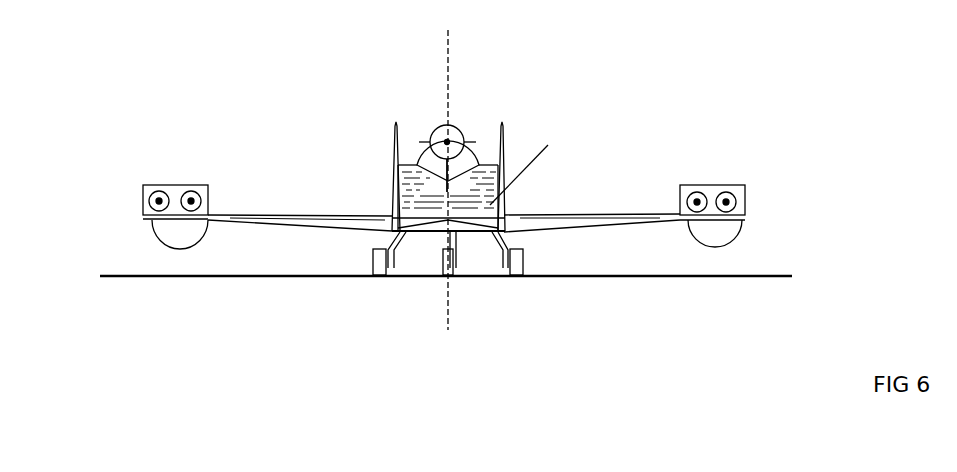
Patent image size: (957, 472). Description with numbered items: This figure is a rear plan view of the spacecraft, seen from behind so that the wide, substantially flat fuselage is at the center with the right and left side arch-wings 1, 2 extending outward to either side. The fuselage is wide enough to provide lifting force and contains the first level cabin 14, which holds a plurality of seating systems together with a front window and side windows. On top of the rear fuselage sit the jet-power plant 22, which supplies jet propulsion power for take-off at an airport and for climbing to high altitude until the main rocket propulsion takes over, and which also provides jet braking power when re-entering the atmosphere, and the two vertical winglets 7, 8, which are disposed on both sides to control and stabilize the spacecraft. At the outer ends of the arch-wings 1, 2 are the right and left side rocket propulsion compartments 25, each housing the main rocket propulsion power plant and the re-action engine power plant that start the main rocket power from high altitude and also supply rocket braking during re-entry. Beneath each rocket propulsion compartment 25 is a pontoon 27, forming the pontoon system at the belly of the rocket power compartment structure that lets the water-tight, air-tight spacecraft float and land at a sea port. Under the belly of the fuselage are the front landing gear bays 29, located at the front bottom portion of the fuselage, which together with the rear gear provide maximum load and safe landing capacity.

The right side arch-wing 1 is at (607, 215).
The left side arch-wing 2 is at (283, 215).
The vertical winglet 7 is at (502, 148).
The vertical winglet 8 is at (393, 147).
The first level cabin 14 is at (473, 140).
The jet-power plant 22 is at (450, 130).
The rocket propulsion compartment 25 is at (145, 200).
The pontoon 27 is at (157, 232).
The front landing gear bay 29 is at (380, 272).